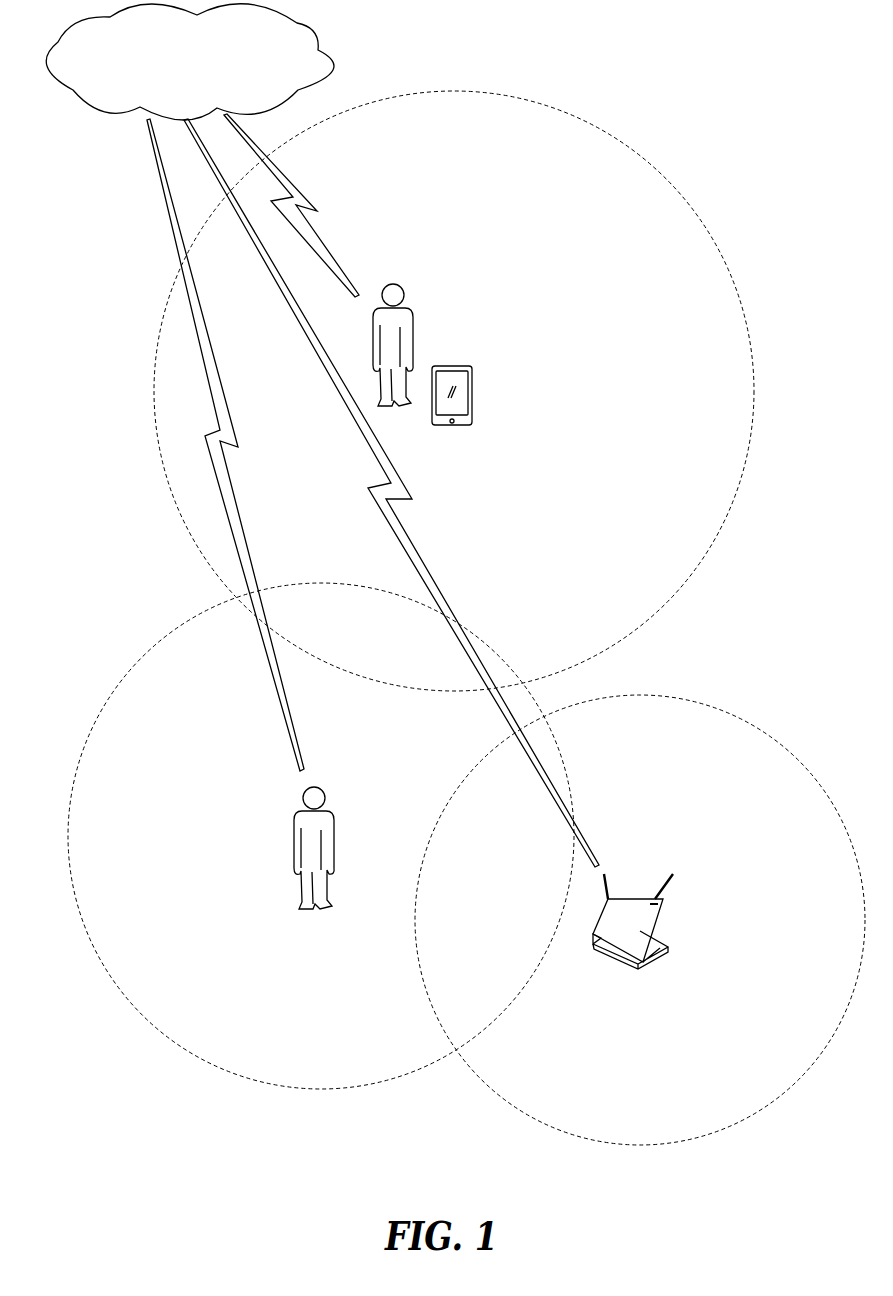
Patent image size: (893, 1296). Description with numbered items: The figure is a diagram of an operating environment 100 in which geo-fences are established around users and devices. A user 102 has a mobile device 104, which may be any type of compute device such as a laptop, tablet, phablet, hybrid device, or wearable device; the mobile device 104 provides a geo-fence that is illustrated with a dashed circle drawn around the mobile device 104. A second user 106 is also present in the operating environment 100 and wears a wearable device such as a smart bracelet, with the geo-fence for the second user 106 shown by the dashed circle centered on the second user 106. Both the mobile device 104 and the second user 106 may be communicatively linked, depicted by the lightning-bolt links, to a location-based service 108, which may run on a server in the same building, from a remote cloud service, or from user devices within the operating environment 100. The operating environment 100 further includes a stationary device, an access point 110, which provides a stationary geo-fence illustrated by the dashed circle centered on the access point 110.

The operating environment 100 is at (664, 60).
The user 102 is at (413, 322).
The mobile device 104 is at (472, 389).
The second user 106 is at (338, 826).
The location-based service 108 is at (297, 23).
The access point 110 is at (657, 945).